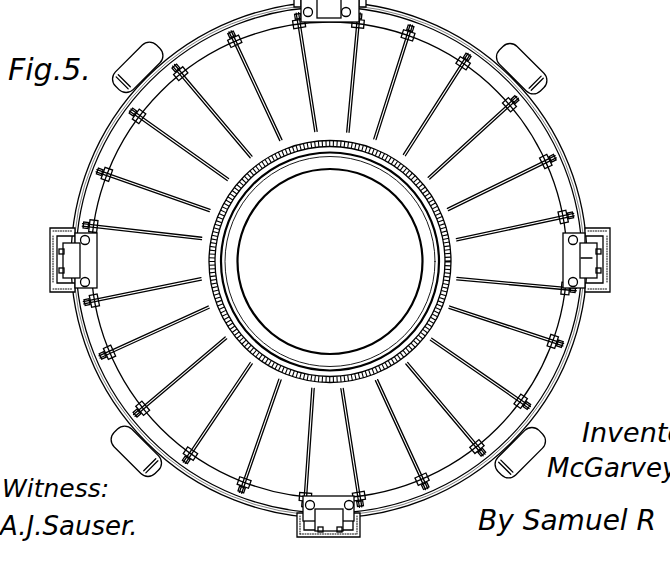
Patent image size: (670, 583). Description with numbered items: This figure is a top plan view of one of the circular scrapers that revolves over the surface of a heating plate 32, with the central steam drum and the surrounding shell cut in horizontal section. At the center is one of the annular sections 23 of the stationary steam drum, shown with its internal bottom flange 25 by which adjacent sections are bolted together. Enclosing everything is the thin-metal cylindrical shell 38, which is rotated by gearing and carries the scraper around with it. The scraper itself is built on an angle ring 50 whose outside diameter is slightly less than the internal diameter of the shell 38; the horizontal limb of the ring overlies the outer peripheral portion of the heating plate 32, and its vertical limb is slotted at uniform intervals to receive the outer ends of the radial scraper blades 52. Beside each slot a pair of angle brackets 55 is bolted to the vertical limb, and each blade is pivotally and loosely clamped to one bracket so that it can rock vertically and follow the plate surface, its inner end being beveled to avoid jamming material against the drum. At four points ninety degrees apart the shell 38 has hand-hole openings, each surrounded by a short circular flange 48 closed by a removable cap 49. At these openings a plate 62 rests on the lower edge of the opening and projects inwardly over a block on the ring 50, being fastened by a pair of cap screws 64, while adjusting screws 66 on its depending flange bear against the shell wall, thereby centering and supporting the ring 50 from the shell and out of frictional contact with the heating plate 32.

The annular section 23 is at (212, 257).
The bottom flange 25 is at (427, 240).
The heating plate 32 is at (329, 249).
The cylindrical shell 38 is at (90, 162).
The circular flange 48 is at (586, 226).
The removable cap 49 is at (52, 258).
The angle ring 50 is at (453, 45).
The radial scraper blade 52 is at (348, 440).
The angle bracket 55 is at (134, 113).
The plate 62 is at (608, 257).
The cap screw 64 is at (573, 276).
The adjusting screw 66 is at (607, 238).